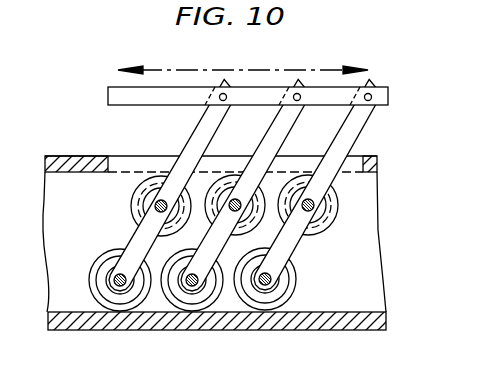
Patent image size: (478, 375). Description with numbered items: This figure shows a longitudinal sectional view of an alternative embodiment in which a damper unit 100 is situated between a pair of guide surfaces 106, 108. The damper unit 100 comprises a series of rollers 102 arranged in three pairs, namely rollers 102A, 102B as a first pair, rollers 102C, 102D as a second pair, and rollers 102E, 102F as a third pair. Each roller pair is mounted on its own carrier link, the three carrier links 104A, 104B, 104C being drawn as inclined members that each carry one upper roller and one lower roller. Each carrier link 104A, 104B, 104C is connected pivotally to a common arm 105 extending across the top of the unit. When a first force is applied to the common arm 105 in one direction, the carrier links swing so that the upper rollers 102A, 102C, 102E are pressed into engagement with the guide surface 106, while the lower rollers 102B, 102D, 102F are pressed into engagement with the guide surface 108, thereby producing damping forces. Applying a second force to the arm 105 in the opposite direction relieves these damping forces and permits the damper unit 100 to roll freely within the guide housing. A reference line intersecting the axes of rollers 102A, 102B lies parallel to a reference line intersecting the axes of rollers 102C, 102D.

The damper unit 100 is at (93, 144).
The rollers 102 is at (302, 247).
The roller 102A is at (132, 208).
The roller 102B is at (111, 258).
The roller 102C is at (226, 180).
The roller 102D is at (190, 302).
The roller 102E is at (330, 208).
The roller 102F is at (275, 297).
The carrier link 104A is at (192, 113).
The carrier link 104B is at (278, 124).
The carrier link 104C is at (350, 117).
The common arm 105 is at (125, 97).
The guide surface 106 is at (98, 178).
The guide surface 108 is at (360, 303).